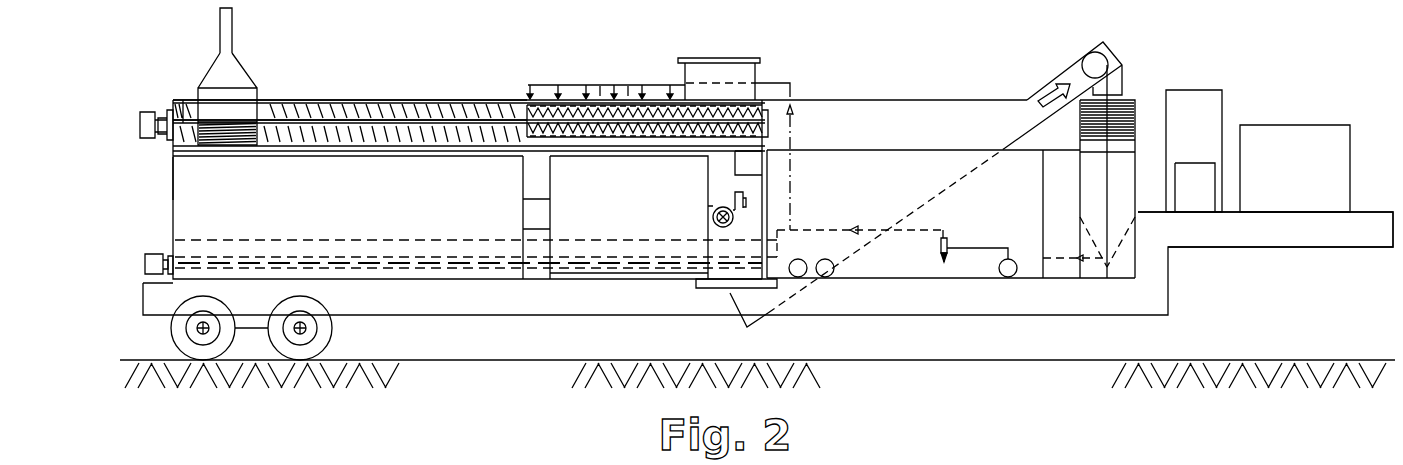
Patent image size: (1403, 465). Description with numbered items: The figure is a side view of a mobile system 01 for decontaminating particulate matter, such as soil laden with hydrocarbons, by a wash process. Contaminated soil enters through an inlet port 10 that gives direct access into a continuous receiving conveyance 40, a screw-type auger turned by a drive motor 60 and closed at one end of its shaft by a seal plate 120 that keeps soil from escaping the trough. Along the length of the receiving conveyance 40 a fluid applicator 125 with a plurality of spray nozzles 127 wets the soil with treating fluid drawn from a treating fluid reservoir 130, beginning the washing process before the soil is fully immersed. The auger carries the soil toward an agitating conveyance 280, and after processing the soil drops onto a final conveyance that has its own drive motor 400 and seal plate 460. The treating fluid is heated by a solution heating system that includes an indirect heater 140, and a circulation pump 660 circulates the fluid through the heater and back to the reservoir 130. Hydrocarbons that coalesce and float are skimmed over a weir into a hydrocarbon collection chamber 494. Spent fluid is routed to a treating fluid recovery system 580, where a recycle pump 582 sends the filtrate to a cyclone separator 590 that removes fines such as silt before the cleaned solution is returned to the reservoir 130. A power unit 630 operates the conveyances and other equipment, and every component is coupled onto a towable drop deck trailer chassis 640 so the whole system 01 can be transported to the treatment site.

The decontamination system 01 is at (152, 166).
The inlet port 10 is at (720, 58).
The receiving conveyance 40 is at (526, 113).
The drive motor 60 is at (140, 127).
The seal plate 120 is at (167, 112).
The fluid applicator 125 is at (582, 79).
The spray nozzles 127 is at (612, 93).
The treating fluid reservoir 130 is at (317, 209).
The indirect heater 140 is at (605, 287).
The agitating conveyance 280 is at (368, 118).
The drive motor 400 is at (143, 263).
The seal plate 460 is at (172, 262).
The hydrocarbon collection chamber 494 is at (1178, 131).
The treating fluid recovery system 580 is at (1046, 294).
The recycle pump 582 is at (1000, 269).
The cyclone separator 590 is at (948, 240).
The power unit 630 is at (1274, 169).
The towable trailer chassis 640 is at (1213, 240).
The circulation pump 660 is at (830, 273).